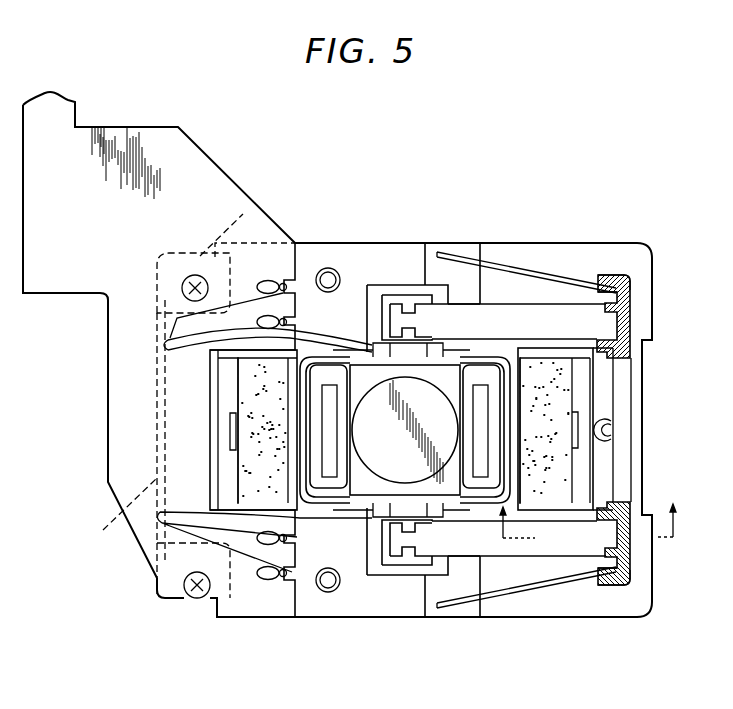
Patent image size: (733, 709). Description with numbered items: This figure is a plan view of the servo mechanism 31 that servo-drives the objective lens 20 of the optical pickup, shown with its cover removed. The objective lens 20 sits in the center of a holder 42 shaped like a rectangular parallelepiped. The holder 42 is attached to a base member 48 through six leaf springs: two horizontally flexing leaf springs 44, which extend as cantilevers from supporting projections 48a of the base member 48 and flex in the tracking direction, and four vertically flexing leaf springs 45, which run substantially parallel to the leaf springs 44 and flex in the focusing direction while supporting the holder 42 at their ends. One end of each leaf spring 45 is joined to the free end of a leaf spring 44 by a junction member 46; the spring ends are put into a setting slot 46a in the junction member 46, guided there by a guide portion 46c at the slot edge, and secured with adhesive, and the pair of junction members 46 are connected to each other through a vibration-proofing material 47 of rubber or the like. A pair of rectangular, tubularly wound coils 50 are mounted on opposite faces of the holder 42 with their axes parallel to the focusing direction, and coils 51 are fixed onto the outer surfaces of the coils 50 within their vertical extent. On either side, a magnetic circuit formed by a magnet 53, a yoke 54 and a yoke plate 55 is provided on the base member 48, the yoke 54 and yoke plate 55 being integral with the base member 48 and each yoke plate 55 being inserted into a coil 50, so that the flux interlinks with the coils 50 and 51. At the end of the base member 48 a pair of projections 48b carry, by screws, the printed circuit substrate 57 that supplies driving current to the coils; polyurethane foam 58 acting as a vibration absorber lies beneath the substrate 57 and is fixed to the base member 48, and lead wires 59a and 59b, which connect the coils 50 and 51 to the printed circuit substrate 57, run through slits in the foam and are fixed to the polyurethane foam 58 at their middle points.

The objective lens 20 is at (412, 390).
The servo mechanism 31 is at (76, 380).
The holder 42 is at (417, 490).
The horizontally flexing leaf springs 44 is at (578, 290).
The vertically flexing leaf springs 45 is at (538, 315).
The junction members 46 is at (622, 300).
The setting slot 46a is at (620, 273).
The guide portion 46c is at (603, 277).
The vibration-proofing material 47 is at (622, 460).
The base member 48 is at (358, 603).
The supporting projections 48a is at (453, 270).
The projections 48b is at (243, 214).
The coils 50 is at (500, 391).
The coils 51 is at (338, 355).
The magnet 53 is at (556, 512).
The yoke 54 is at (580, 512).
The yoke plate 55 is at (478, 415).
The printed circuit substrate 57 is at (115, 477).
The polyurethane foam 58 is at (119, 517).
The lead wire 59a is at (180, 332).
The lead wire 59b is at (180, 550).